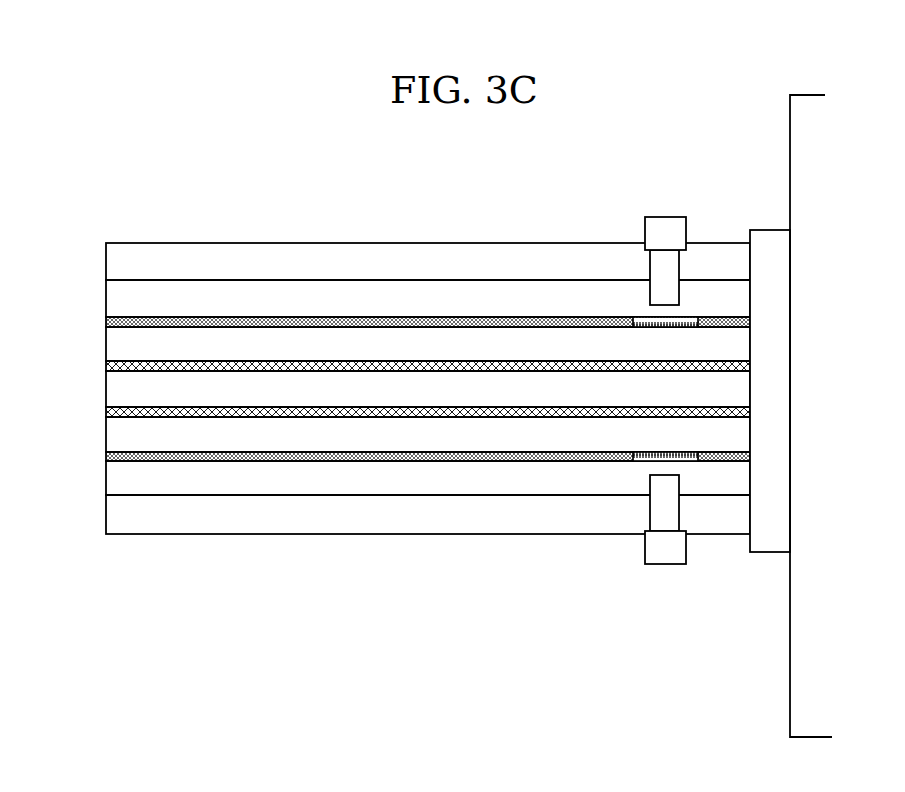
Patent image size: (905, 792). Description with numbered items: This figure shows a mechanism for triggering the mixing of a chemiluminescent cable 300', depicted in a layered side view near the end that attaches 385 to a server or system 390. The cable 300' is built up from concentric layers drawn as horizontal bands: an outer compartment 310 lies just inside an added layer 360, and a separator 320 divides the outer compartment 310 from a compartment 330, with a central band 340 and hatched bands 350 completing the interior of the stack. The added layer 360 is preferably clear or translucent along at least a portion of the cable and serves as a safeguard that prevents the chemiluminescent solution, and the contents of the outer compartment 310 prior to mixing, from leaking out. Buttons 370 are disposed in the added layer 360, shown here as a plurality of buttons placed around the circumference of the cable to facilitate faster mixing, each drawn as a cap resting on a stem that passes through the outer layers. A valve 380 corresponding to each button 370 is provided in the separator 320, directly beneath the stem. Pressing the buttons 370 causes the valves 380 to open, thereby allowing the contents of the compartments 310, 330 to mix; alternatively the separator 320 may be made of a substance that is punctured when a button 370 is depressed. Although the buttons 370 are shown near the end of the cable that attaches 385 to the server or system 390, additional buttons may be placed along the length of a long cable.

The cable 300' is at (449, 386).
The outer compartment 310 is at (293, 310).
The separator 320 is at (106, 321).
The compartment 330 is at (293, 356).
The central layer 340 is at (293, 400).
The second separator layer 350 is at (106, 411).
The added layer 360 is at (240, 258).
The button 370 is at (662, 228).
The valve 380 is at (688, 320).
The end of the cable 385 is at (775, 243).
The server or system 390 is at (810, 142).